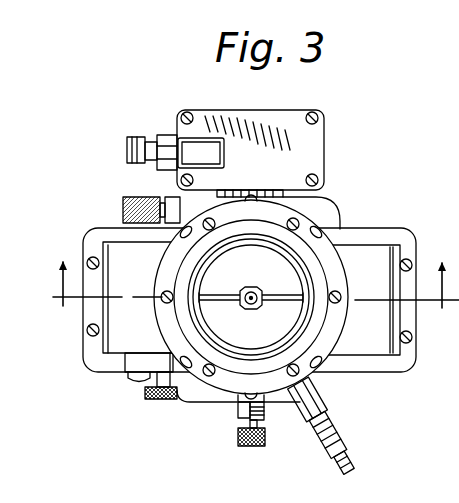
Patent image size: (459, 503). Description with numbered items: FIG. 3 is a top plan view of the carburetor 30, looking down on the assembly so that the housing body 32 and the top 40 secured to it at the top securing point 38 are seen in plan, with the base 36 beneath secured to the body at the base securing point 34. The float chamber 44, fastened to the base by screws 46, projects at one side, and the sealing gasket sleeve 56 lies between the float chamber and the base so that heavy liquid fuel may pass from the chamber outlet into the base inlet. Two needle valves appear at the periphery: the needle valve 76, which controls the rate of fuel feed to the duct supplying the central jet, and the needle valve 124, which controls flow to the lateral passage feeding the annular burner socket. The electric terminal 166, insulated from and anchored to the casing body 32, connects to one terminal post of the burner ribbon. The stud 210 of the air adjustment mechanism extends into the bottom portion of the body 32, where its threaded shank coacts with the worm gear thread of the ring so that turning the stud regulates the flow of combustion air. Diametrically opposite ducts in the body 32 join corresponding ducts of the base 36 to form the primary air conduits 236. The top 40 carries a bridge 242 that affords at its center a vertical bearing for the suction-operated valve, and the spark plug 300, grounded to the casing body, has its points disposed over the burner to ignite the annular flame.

The carburetor 30 is at (391, 183).
The body 32 is at (323, 213).
The base securing point 34 is at (91, 339).
The base 36 is at (339, 206).
The top securing point 38 is at (333, 308).
The top 40 is at (182, 268).
The float chamber 44 is at (329, 140).
The screws 46 is at (228, 190).
The sealing gasket sleeve 56 is at (254, 190).
The needle valve 76 is at (248, 447).
The needle valve 124 is at (121, 208).
The electric terminal 166 is at (236, 409).
The stud 210 is at (165, 406).
The primary air conduits 236 is at (100, 250).
The bridge 242 is at (288, 303).
The spark plug 300 is at (340, 432).